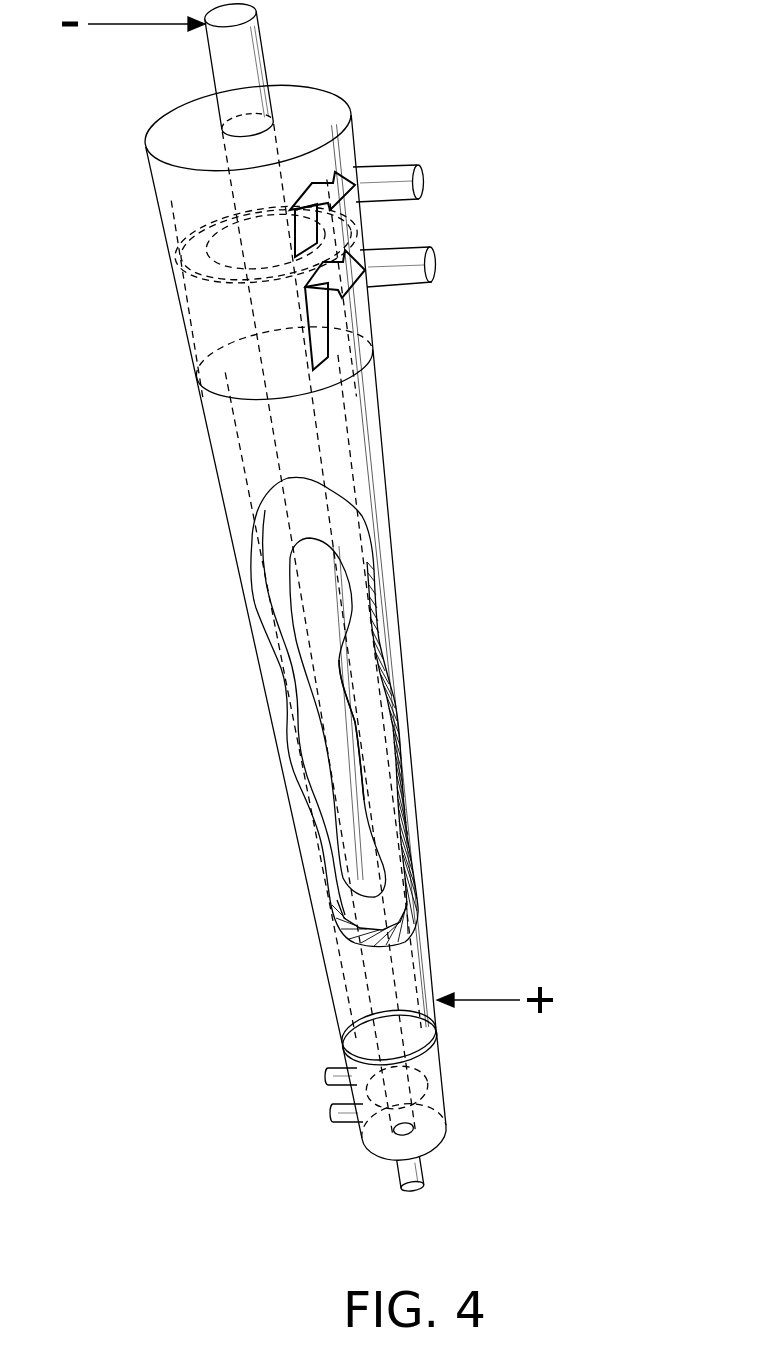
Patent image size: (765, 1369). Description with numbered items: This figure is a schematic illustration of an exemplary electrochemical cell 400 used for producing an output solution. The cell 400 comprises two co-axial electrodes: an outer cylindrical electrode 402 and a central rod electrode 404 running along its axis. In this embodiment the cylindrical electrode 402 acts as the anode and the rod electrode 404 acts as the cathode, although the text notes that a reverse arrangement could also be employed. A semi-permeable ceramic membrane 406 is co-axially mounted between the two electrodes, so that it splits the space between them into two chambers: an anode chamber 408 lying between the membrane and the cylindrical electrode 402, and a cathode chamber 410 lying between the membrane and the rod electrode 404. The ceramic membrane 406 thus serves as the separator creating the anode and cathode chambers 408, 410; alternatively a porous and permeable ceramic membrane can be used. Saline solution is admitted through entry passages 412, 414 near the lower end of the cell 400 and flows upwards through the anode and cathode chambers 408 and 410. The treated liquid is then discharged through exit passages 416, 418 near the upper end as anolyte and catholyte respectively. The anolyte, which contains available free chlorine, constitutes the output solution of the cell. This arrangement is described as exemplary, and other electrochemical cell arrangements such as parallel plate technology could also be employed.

The cell 400 is at (430, 553).
The cylindrical electrode 402 is at (223, 513).
The rod electrode 404 is at (345, 780).
The semi-permeable ceramic membrane 406 is at (310, 508).
The anode chamber 408 is at (258, 565).
The cathode chamber 410 is at (367, 738).
The entry passage 412 is at (330, 1112).
The entry passage 414 is at (322, 1080).
The exit passage 416 is at (436, 266).
The exit passage 418 is at (428, 180).